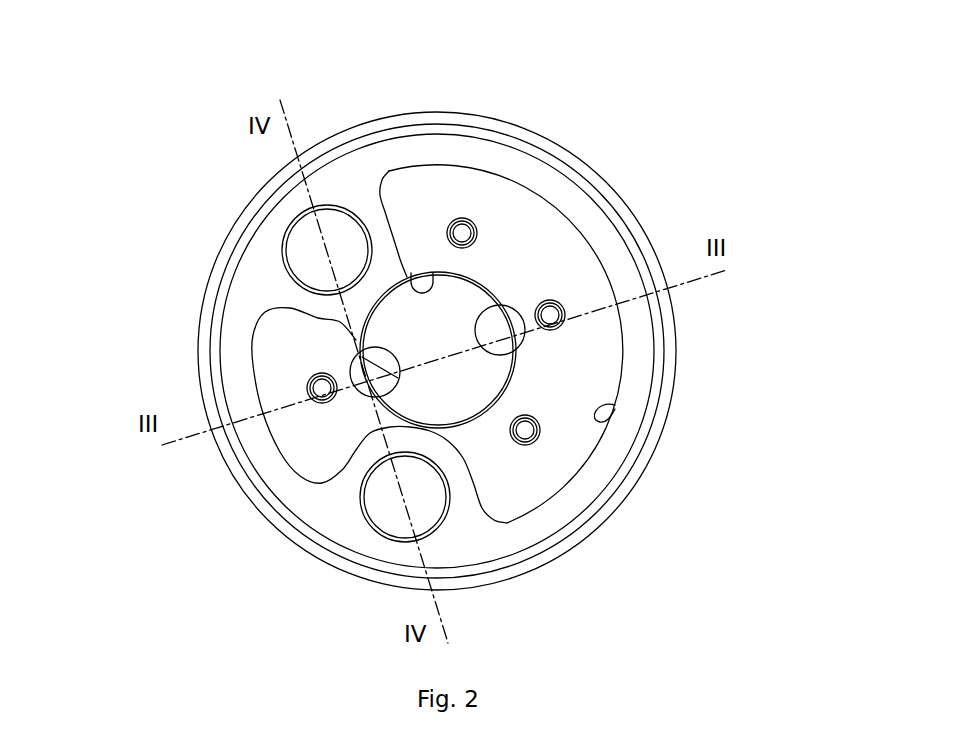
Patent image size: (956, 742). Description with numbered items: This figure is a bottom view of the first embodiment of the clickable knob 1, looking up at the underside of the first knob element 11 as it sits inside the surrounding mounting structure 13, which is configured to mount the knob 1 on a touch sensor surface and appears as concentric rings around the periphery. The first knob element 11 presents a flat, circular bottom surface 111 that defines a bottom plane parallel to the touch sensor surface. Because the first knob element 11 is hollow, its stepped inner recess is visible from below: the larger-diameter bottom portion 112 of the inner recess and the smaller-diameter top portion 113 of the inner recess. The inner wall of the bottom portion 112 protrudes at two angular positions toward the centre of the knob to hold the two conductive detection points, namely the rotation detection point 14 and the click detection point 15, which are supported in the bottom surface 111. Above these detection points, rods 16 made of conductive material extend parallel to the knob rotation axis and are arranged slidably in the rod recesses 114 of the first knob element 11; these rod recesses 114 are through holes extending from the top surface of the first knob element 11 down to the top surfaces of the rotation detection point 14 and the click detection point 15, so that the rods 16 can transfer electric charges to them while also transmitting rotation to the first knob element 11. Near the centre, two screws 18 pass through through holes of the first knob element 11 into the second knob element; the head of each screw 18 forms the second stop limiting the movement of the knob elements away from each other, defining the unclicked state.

The clickable knob 1 is at (180, 200).
The first knob element 11 is at (503, 163).
The mounting structure 13 is at (570, 152).
The bottom surface 111 is at (593, 222).
The bottom portion of the inner recess 112 is at (615, 405).
The top portion of the inner recess 113 is at (410, 280).
The rod recesses 114 is at (474, 239).
The rotation detection point 14 is at (390, 522).
The click detection point 15 is at (298, 233).
The rods 16 is at (475, 225).
The screw 18 is at (512, 307).